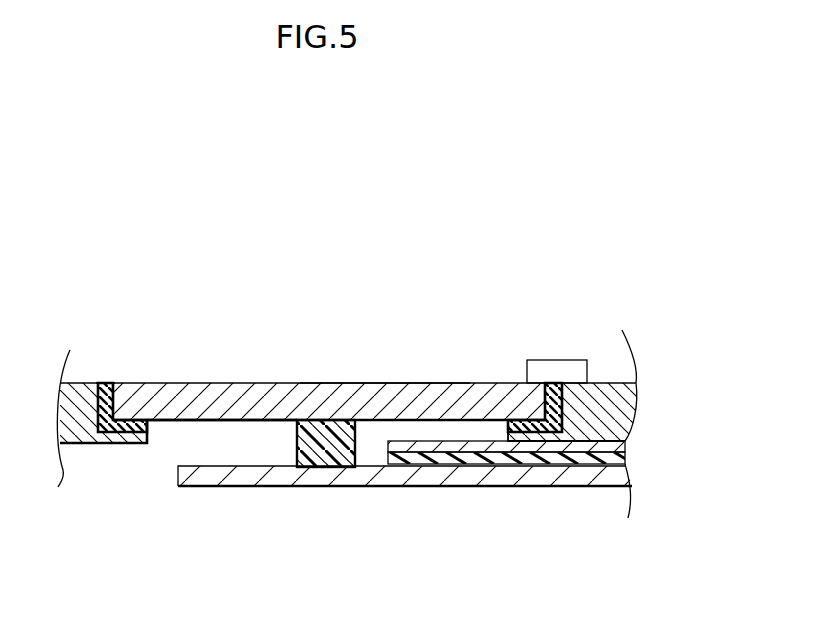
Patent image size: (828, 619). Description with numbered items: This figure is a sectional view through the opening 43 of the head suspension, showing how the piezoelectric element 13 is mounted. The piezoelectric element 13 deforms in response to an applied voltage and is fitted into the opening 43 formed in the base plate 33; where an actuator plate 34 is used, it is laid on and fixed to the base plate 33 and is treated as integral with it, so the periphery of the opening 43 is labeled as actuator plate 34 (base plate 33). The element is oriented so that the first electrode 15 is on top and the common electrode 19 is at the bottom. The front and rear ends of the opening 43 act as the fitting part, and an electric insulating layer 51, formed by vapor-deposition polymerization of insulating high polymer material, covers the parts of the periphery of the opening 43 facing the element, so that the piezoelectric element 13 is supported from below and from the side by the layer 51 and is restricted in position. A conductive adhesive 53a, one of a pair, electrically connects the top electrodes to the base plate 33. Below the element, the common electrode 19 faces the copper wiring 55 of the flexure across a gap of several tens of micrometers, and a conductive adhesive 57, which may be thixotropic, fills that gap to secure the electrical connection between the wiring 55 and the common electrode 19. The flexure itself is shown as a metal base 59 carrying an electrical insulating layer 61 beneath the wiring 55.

The piezoelectric element 13 is at (288, 390).
The first electrode 15 is at (386, 383).
The common electrode 19 is at (165, 423).
The base plate 33 is at (369, 431).
The actuator plate 34 is at (96, 398).
The opening 43 is at (100, 383).
The electric insulating layer 51 is at (103, 383).
The conductive adhesive 53a is at (556, 365).
The wiring 55 is at (295, 477).
The conductive adhesive 57 is at (356, 450).
The metal base 59 is at (623, 445).
The electrical insulating layer 61 is at (625, 458).